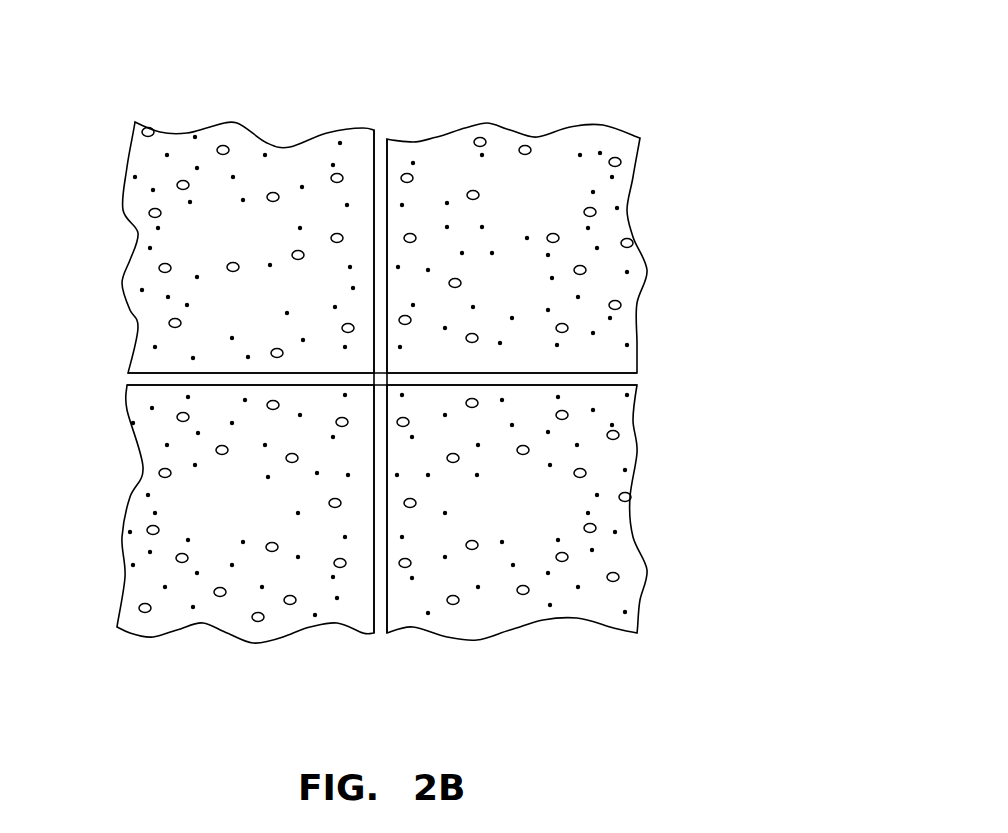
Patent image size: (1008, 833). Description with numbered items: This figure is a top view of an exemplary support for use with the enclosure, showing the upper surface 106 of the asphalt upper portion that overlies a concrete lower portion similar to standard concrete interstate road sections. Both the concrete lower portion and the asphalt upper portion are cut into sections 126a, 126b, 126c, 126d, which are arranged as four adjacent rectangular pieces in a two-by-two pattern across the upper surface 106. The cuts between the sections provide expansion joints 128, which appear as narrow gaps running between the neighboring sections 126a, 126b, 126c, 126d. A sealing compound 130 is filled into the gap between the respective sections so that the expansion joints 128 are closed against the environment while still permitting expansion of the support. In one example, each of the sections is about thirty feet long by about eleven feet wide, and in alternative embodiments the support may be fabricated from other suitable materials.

The upper surface 106 is at (431, 343).
The section 126a is at (268, 250).
The section 126b is at (580, 208).
The section 126c is at (273, 525).
The section 126d is at (565, 523).
The expansion joint 128 is at (372, 252).
The sealing compound 130 is at (587, 378).